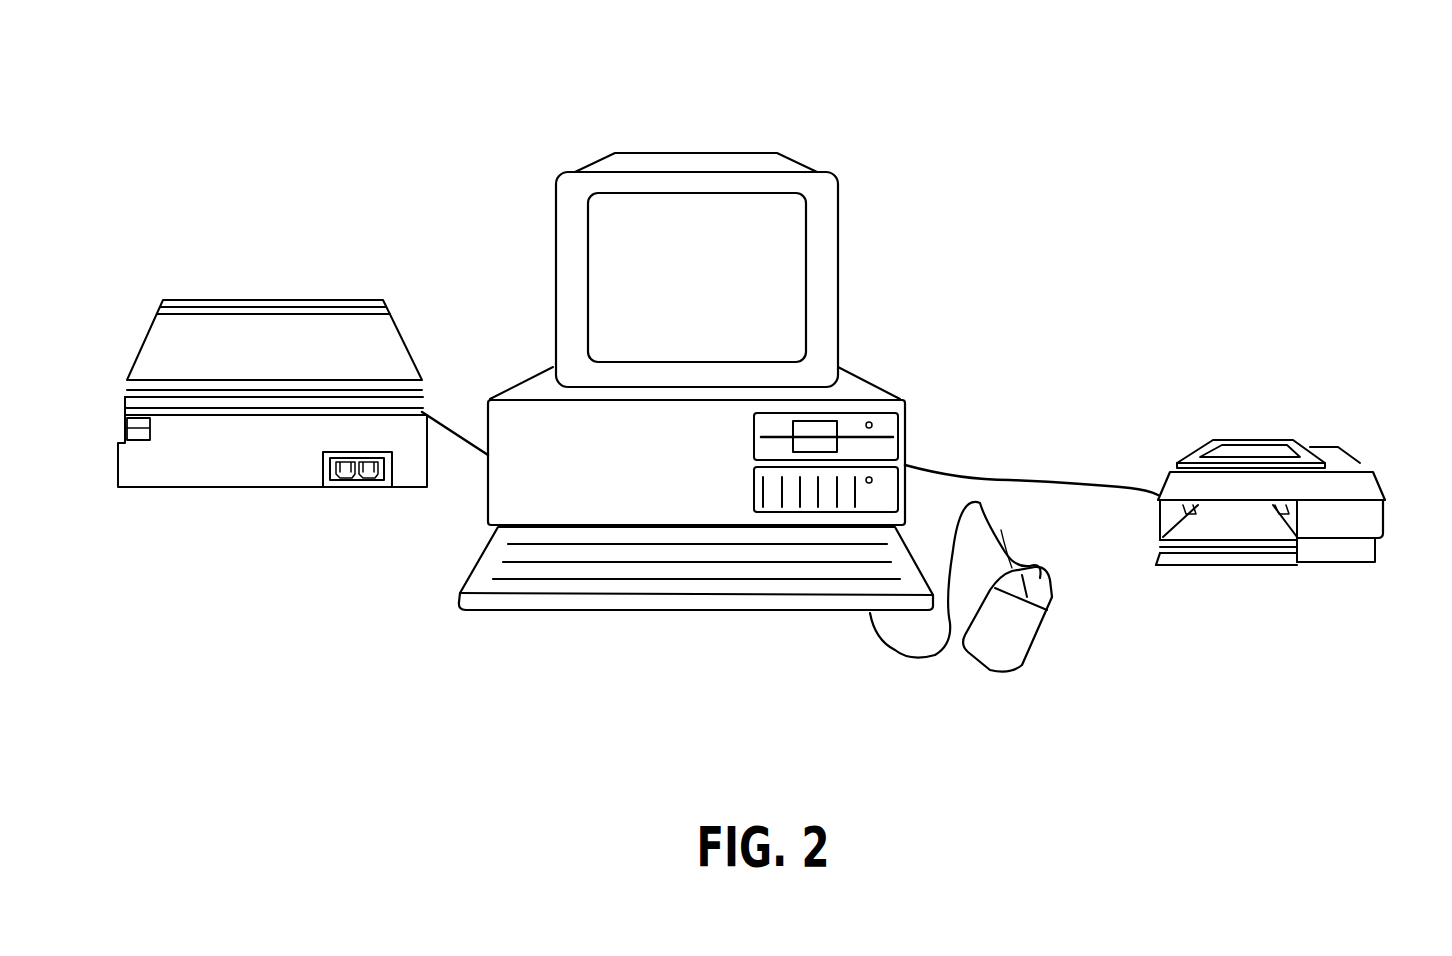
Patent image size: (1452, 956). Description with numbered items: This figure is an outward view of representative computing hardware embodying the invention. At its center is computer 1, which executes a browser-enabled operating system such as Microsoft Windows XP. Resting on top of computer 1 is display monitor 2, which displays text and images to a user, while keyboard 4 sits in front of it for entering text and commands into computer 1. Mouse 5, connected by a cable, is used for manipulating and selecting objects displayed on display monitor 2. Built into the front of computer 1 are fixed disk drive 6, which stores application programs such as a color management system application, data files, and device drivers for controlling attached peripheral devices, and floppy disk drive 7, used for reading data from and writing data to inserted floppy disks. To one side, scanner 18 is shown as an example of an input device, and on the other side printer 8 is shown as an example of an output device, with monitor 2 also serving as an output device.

The computer 1 is at (748, 105).
The display monitor 2 is at (567, 201).
The keyboard 4 is at (530, 605).
The mouse 5 is at (1012, 670).
The fixed disk drive 6 is at (807, 512).
The floppy disk drive 7 is at (892, 448).
The printer 8 is at (1385, 508).
The scanner 18 is at (200, 487).